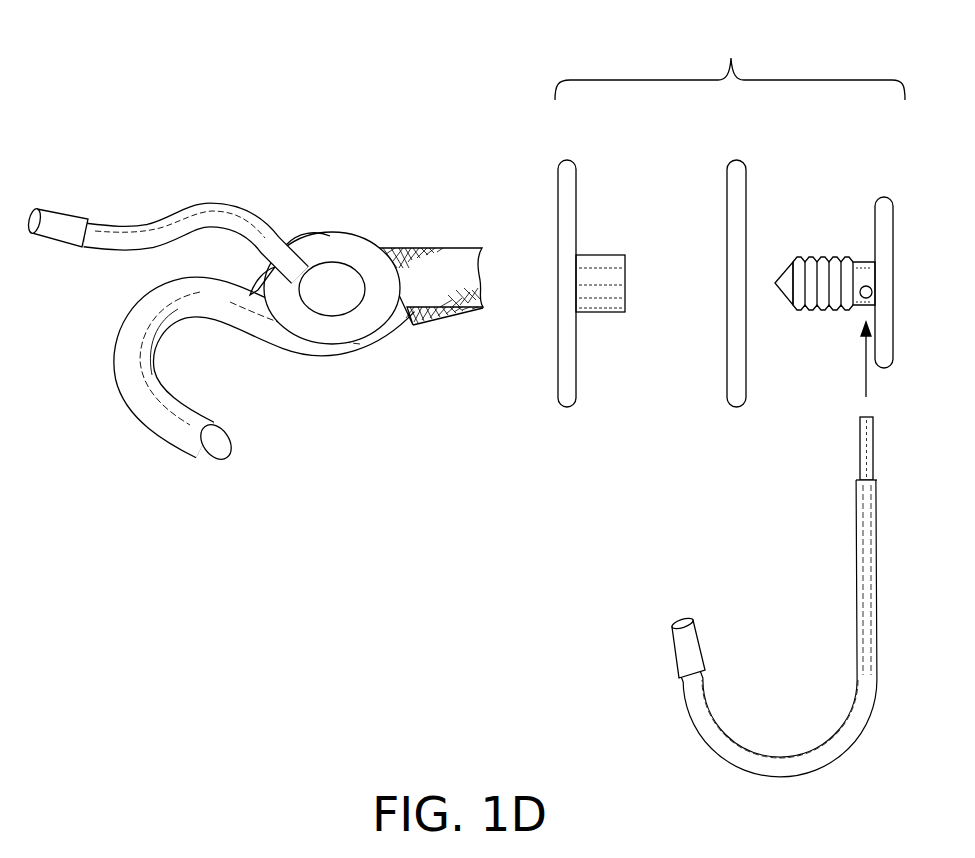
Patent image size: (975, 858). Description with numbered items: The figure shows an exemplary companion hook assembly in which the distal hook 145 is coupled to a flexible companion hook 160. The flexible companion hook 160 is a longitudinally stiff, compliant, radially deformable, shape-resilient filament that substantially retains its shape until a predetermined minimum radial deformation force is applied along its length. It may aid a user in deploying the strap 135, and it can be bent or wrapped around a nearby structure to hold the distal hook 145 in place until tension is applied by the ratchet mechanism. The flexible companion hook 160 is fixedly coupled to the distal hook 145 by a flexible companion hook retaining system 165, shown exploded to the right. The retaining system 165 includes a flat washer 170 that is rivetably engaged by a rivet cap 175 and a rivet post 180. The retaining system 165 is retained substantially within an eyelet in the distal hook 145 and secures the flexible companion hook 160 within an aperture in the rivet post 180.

The strap 135 is at (414, 248).
The distal hook 145 is at (170, 448).
The flexible companion hook 160 is at (146, 226).
The flexible companion hook retaining system 165 is at (207, 255).
The flat washer 170 is at (727, 192).
The rivet cap 175 is at (558, 190).
The rivet post 180 is at (326, 260).